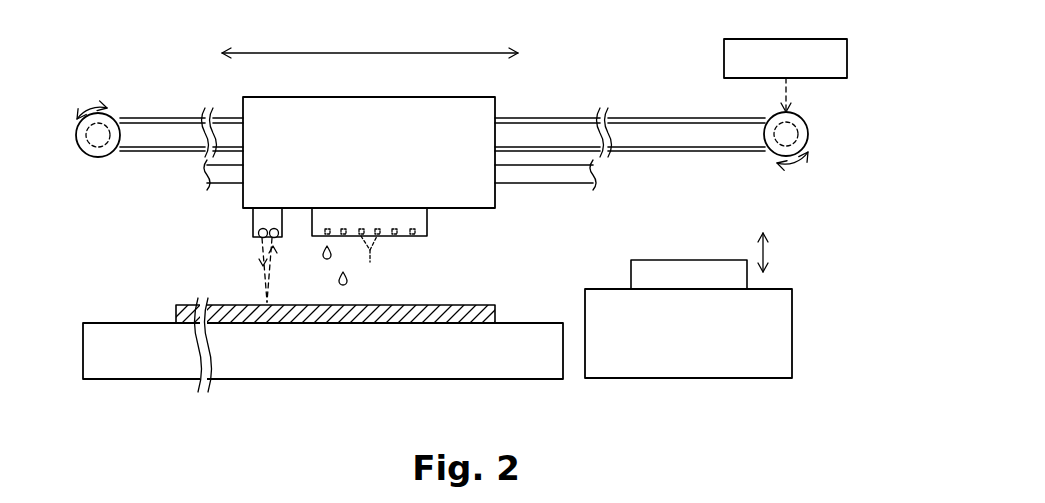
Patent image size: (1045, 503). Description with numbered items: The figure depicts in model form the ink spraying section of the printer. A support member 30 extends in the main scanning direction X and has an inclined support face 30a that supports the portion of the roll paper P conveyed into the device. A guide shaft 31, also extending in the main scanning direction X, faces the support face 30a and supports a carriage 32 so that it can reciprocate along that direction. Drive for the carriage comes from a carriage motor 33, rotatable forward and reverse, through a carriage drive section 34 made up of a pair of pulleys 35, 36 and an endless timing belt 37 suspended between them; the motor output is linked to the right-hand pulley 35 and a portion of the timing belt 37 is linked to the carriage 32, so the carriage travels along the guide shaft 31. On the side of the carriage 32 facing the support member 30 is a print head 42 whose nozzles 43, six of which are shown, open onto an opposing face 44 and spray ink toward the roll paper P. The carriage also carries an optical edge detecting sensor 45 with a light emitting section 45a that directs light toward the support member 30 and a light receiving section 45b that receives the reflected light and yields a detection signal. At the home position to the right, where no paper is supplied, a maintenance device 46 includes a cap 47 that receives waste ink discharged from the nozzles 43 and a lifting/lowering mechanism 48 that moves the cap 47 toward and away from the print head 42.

The support member 30 is at (323, 344).
The support face 30a is at (460, 318).
The guide shaft 31 is at (537, 184).
The carriage 32 is at (462, 97).
The carriage motor 33 is at (814, 38).
The carriage drive section 34 is at (645, 82).
The pulley 35 is at (809, 128).
The pulley 36 is at (98, 158).
The timing belt 37 is at (540, 118).
The print head 42 is at (395, 249).
The nozzles 43 is at (356, 263).
The opposing face 44 is at (417, 238).
The edge detecting sensor 45 is at (206, 253).
The light emitting section 45a is at (269, 238).
The light receiving section 45b is at (261, 229).
The maintenance device 46 is at (790, 262).
The cap 47 is at (722, 259).
The lifting/lowering mechanism 48 is at (792, 333).
The roll paper P is at (193, 304).
The main scanning direction X is at (370, 40).